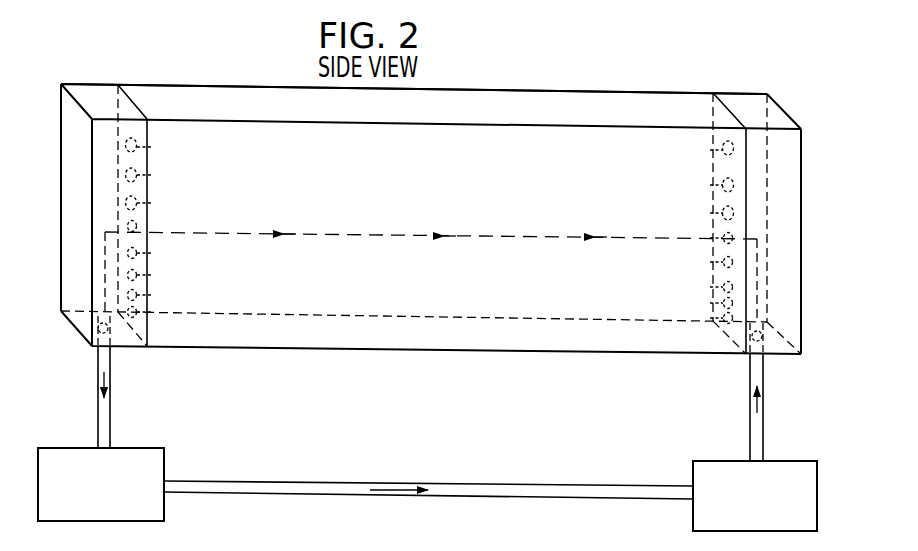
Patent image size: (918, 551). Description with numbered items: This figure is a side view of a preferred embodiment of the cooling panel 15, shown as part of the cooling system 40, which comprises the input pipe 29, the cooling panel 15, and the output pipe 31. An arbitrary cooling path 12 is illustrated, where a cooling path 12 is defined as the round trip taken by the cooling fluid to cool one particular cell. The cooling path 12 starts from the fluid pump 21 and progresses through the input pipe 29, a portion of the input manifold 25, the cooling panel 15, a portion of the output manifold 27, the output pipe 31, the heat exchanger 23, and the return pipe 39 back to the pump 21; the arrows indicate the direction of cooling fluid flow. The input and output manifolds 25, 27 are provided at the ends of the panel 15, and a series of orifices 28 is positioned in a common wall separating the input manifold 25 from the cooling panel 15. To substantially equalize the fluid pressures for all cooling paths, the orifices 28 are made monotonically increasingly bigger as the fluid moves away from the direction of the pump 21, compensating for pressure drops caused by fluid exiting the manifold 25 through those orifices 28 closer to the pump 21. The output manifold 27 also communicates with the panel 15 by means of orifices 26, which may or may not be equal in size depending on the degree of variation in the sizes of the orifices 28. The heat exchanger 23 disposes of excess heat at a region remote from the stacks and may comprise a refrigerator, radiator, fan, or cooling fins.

The cooling path 12 is at (370, 235).
The cooling panel 15 is at (483, 137).
The fluid pump 21 is at (693, 467).
The heat exchanger 23 is at (166, 458).
The input manifold 25 is at (773, 152).
The orifices 26 is at (152, 296).
The output manifold 27 is at (108, 157).
The orifices 28 is at (710, 305).
The input pipe 29 is at (750, 420).
The output pipe 31 is at (112, 408).
The return pipe 39 is at (570, 486).
The cooling system 40 is at (243, 87).